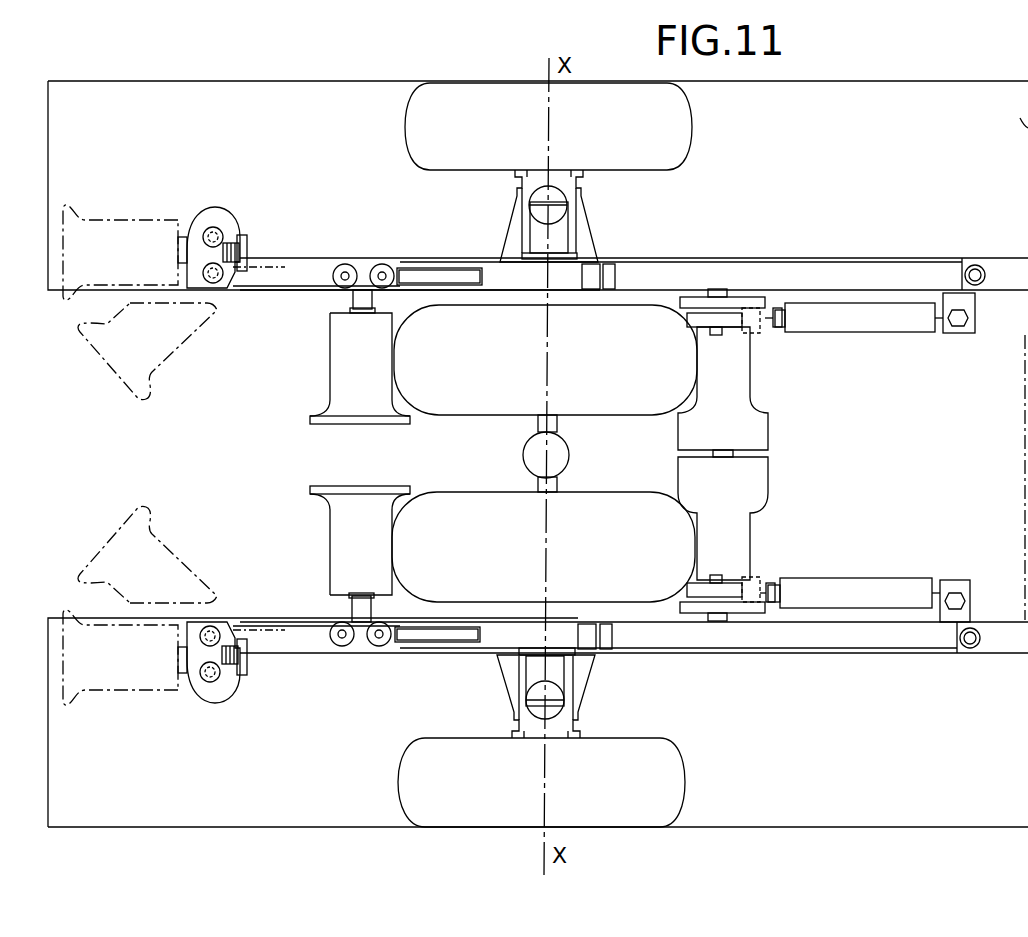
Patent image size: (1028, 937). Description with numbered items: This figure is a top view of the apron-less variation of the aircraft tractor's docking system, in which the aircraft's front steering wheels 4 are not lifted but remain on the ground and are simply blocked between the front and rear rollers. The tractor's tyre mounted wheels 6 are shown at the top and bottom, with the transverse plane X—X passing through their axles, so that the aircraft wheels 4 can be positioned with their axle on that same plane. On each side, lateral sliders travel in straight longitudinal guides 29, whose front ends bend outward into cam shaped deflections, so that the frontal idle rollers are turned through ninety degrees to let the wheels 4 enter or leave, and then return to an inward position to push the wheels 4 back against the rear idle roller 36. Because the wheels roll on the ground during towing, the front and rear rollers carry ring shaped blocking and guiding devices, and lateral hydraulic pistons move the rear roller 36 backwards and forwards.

The front steering wheels 4 is at (625, 505).
The tyre mounted wheels 6 is at (681, 131).
The guides 29 is at (308, 270).
The idle roller 36 is at (742, 359).